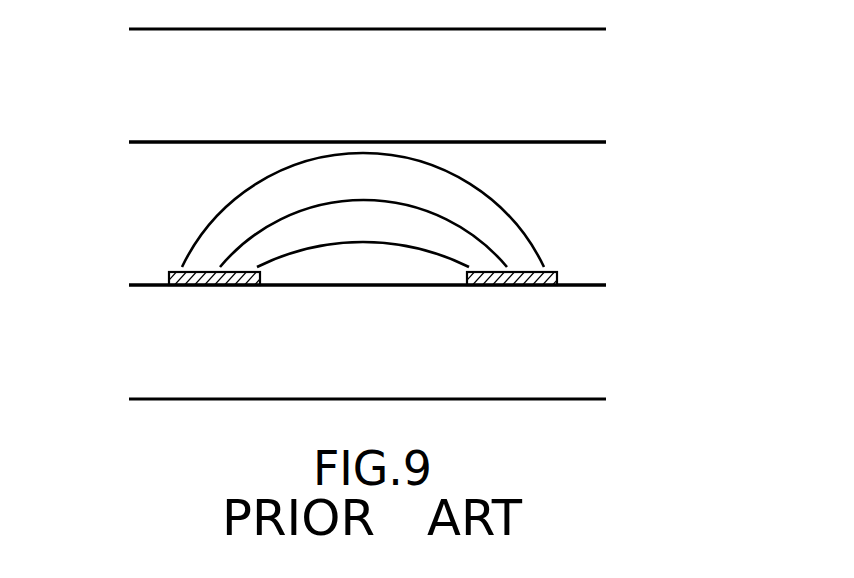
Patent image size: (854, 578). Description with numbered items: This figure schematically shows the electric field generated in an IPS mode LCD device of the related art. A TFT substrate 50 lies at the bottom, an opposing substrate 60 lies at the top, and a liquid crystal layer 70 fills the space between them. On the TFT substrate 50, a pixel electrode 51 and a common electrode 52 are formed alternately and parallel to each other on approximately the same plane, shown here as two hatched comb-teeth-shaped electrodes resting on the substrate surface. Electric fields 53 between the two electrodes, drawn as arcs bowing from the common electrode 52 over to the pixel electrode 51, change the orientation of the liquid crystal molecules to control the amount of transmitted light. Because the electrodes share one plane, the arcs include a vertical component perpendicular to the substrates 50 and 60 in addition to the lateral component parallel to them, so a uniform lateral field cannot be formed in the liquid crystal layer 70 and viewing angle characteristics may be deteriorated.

The substrate 60 is at (582, 104).
The liquid crystal layer 70 is at (150, 192).
The TFT substrate 50 is at (588, 362).
The electric fields 53 is at (500, 202).
The common electrodes 52 is at (228, 273).
The pixel electrodes 51 is at (523, 275).